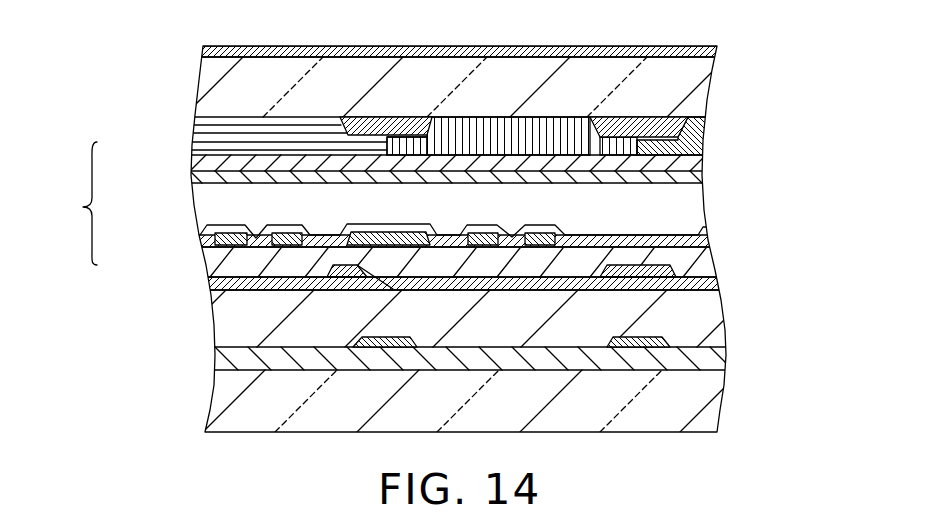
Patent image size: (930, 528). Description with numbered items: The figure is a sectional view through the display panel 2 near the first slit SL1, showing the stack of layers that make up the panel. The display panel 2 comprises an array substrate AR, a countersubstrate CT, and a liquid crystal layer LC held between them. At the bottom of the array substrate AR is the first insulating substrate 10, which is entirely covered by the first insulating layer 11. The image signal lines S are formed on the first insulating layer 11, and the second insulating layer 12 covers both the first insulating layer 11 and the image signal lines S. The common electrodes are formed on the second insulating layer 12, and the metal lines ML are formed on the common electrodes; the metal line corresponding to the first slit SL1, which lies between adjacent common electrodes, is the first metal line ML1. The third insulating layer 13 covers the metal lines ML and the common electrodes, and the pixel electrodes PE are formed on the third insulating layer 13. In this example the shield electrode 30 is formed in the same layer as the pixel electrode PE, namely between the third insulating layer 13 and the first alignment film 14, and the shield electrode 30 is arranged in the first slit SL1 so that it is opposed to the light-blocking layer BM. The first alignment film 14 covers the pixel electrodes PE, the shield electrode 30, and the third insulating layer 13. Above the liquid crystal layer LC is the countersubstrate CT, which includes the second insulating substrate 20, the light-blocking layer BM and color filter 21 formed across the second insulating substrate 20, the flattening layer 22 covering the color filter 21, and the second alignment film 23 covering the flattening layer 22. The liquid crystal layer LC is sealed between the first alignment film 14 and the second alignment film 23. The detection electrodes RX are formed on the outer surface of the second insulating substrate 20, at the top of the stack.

The display panel 2 is at (81, 203).
The countersubstrate CT is at (442, 97).
The liquid crystal layer LC is at (206, 200).
The array substrate AR is at (441, 309).
The detection electrode RX is at (693, 46).
The second insulating substrate 20 is at (702, 73).
The color filter 21 is at (500, 125).
The light-blocking layer BM is at (402, 127).
The flattening layer 22 is at (705, 162).
The second alignment film 23 is at (703, 179).
The first alignment film 14 is at (707, 233).
The third insulating layer 13 is at (708, 260).
The second insulating layer 12 is at (708, 309).
The first insulating layer 11 is at (712, 356).
The first insulating substrate 10 is at (712, 402).
The pixel electrode PE is at (290, 236).
The shield electrode 30 is at (384, 234).
The first slit SL1 is at (408, 278).
The metal line ML is at (634, 266).
The first metal line ML1 is at (365, 290).
The image signal line S is at (400, 337).